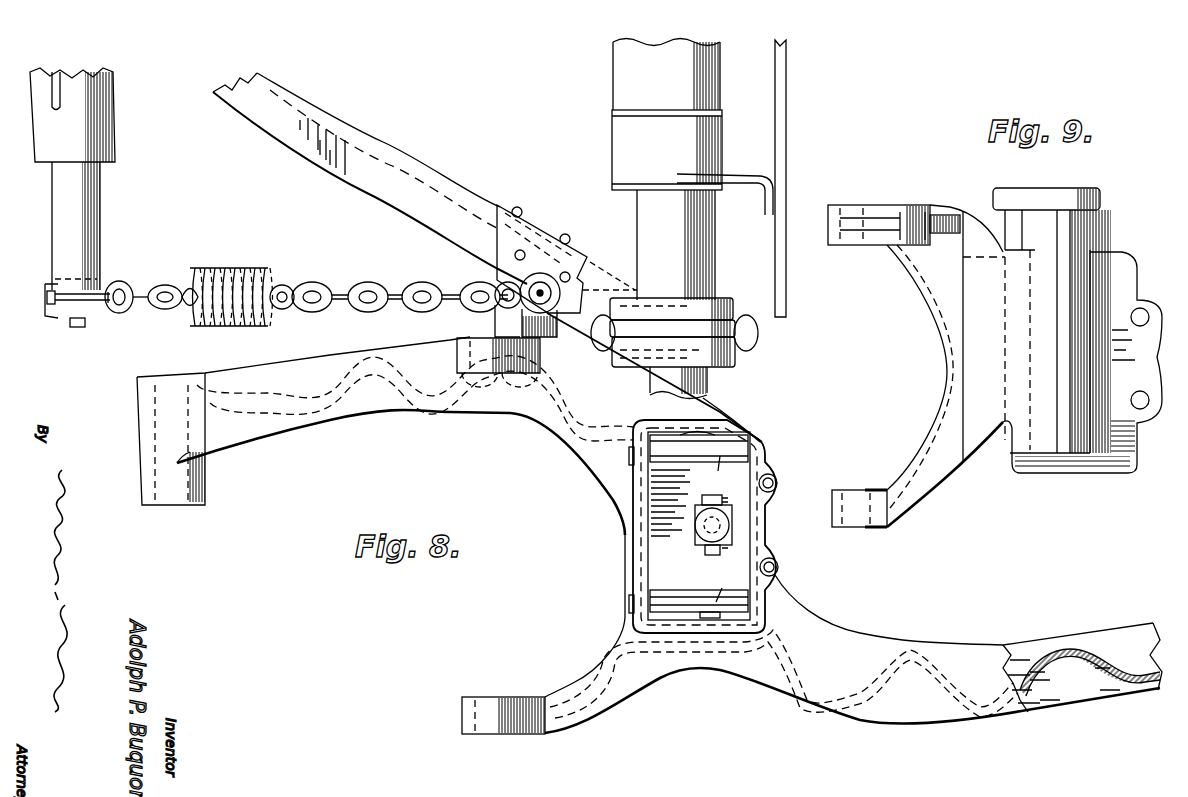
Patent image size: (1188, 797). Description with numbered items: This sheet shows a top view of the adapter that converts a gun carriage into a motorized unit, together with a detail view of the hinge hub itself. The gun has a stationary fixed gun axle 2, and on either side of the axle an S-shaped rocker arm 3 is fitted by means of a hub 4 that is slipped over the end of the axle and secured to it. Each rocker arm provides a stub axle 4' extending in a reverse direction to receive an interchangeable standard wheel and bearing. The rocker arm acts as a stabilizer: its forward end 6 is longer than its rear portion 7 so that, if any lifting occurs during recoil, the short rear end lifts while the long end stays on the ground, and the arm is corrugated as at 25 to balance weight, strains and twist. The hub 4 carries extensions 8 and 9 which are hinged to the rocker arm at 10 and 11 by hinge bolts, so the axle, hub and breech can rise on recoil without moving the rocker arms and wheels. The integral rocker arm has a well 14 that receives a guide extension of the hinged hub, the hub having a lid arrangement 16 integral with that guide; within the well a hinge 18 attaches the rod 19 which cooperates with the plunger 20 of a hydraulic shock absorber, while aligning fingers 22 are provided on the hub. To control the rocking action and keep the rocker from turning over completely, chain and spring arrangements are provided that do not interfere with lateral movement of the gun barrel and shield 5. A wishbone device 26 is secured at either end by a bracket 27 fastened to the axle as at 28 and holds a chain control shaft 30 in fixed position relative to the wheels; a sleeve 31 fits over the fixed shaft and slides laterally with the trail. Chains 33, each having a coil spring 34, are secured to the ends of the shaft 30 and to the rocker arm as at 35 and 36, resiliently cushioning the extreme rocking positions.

In FIG. 8, the gun axle 2 is at (700, 390).
In FIG. 8, the S-shaped rocker arm 3 is at (873, 728).
In FIG. 9, the hub 4 is at (1012, 357).
In FIG. 8, the stub axle 4' is at (177, 456).
In FIG. 8, the shield 5 is at (788, 101).
In FIG. 8, the forward end 6 is at (941, 712).
In FIG. 8, the rear portion 7 is at (359, 402).
In FIG. 9, the extension 8 is at (860, 530).
In FIG. 9, the extension 9 is at (867, 206).
In FIG. 8, the hinge point 10 is at (479, 697).
In FIG. 8, the hinge point 11 is at (485, 373).
In FIG. 8, the well 14 is at (660, 548).
In FIG. 9, the lid arrangement 16 is at (1118, 455).
In FIG. 8, the hinge 18 is at (704, 550).
In FIG. 8, the rod 19 is at (735, 527).
In FIG. 8, the plunger 20 is at (692, 518).
In FIG. 8, the aligning finger 22 is at (777, 479).
In FIG. 8, the corrugation 25 is at (298, 410).
In FIG. 8, the wishbone device 26 is at (452, 187).
In FIG. 8, the bracket 27 is at (550, 231).
In FIG. 8, the fastening 28 is at (746, 322).
In FIG. 8, the chain control shaft 30 is at (92, 241).
In FIG. 8, the sleeve 31 is at (100, 130).
In FIG. 8, the chain 33 is at (318, 312).
In FIG. 8, the coil spring 34 is at (246, 268).
In FIG. 8, the chain attachment 35 is at (503, 281).
In FIG. 8, the chain attachment 36 is at (545, 282).